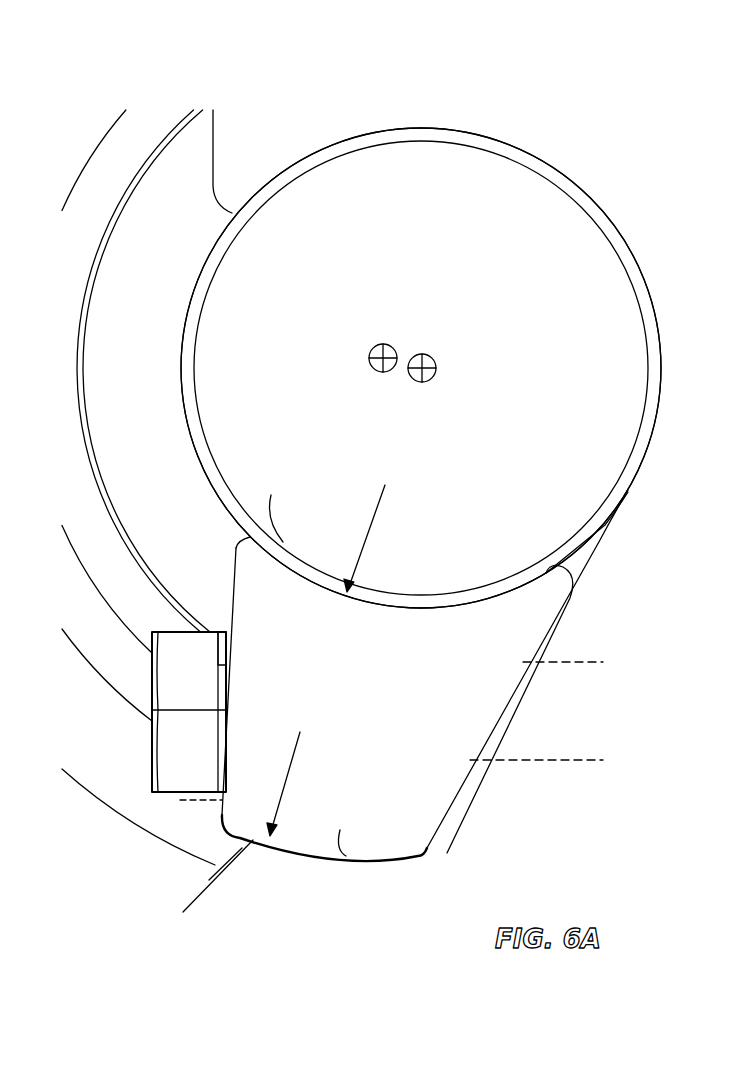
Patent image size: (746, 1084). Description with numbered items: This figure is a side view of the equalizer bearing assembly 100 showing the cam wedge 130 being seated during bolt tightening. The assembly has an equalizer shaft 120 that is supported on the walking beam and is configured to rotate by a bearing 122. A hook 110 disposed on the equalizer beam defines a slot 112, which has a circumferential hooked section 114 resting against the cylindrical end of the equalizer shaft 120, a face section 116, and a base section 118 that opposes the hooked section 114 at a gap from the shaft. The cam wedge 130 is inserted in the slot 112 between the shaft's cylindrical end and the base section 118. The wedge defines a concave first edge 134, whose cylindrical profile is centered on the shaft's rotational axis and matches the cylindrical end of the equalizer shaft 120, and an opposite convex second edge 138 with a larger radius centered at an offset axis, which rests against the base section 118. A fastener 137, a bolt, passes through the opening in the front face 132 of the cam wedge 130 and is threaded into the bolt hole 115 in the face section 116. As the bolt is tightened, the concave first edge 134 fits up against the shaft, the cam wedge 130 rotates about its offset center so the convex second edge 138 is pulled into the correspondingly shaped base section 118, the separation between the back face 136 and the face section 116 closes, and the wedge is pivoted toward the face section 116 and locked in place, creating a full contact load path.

The equalizer bearing assembly 100 is at (402, 491).
The hook 110 is at (213, 173).
The slot 112 is at (654, 406).
The hooked section 114 is at (553, 175).
The bolt hole 115 is at (557, 771).
The face section 116 is at (560, 598).
The base section 118 is at (378, 856).
The equalizer shaft 120 is at (417, 279).
The bearing 122 is at (132, 177).
The cam wedge 130 is at (415, 707).
The front face 132 is at (232, 562).
The first edge 134 is at (437, 603).
The back face 136 is at (435, 828).
The fastener 137 is at (152, 757).
The second edge 138 is at (297, 855).